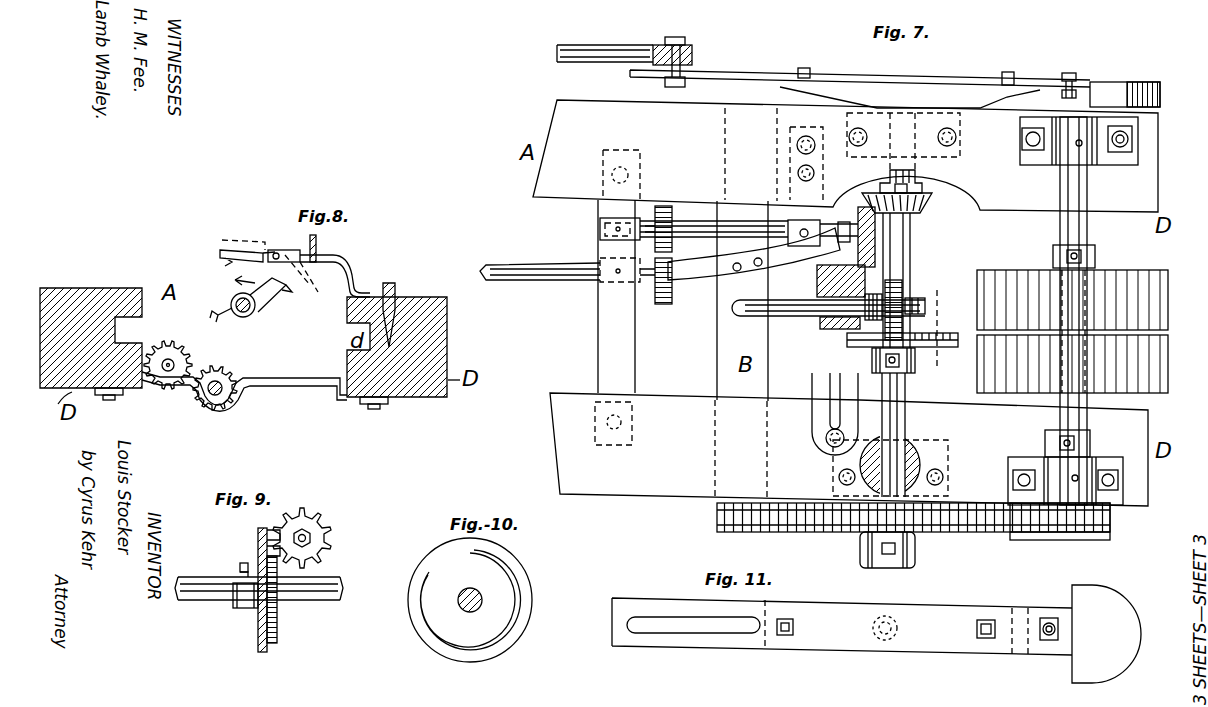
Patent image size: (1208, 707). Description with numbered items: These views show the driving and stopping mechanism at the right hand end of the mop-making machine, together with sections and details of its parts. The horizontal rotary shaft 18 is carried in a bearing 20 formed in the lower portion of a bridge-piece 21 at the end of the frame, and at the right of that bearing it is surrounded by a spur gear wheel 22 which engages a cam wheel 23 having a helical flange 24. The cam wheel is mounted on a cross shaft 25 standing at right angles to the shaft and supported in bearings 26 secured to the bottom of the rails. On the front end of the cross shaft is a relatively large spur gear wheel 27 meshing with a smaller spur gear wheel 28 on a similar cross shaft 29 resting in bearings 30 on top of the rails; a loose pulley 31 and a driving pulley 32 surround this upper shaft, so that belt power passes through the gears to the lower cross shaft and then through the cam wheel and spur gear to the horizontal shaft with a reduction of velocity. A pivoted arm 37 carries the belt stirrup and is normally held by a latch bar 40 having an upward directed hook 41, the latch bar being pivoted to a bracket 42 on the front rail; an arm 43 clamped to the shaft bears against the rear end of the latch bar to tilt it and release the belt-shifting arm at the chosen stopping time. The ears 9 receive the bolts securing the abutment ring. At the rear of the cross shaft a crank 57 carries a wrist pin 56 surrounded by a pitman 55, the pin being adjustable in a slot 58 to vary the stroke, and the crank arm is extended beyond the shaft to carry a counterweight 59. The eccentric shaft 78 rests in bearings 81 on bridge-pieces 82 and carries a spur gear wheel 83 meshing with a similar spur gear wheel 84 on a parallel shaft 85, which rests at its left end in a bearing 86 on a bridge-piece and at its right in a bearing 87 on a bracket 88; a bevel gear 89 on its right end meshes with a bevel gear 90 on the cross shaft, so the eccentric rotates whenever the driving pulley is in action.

In FIG. 7, the ears 9 is at (935, 332).
In FIG. 7, the horizontal rotary shaft 18 is at (812, 312).
In FIG. 8, the horizontal rotary shaft 18 is at (250, 310).
In FIG. 9, the horizontal rotary shaft 18 is at (308, 540).
In FIG. 7, the bearing 20 is at (822, 330).
In FIG. 7, the bridge-piece 21 is at (800, 391).
In FIG. 7, the spur gear wheel 22 is at (913, 276).
In FIG. 9, the spur gear wheel 22 is at (332, 534).
In FIG. 7, the cam wheel 23 is at (940, 346).
In FIG. 9, the cam wheel 23 is at (258, 540).
In FIG. 10, the cam wheel 23 is at (523, 556).
In FIG. 7, the helical flange 24 is at (931, 339).
In FIG. 9, the helical flange 24 is at (277, 612).
In FIG. 10, the helical flange 24 is at (525, 586).
In FIG. 7, the cross shaft 25 is at (906, 396).
In FIG. 9, the cross shaft 25 is at (324, 604).
In FIG. 10, the cross shaft 25 is at (478, 608).
In FIG. 7, the bearings 26 is at (941, 160).
In FIG. 7, the spur gear wheel 27 is at (917, 525).
In FIG. 7, the spur gear wheel 28 is at (1098, 540).
In FIG. 7, the cross shaft 29 is at (1088, 420).
In FIG. 7, the bearings 30 is at (1126, 152).
In FIG. 7, the loose pulley 31 is at (1168, 318).
In FIG. 7, the driving pulley 32 is at (1168, 362).
In FIG. 8, the arm 37 is at (316, 244).
In FIG. 8, the latch bar 40 is at (242, 250).
In FIG. 8, the hook 41 is at (300, 262).
In FIG. 8, the bracket 42 is at (355, 285).
In FIG. 8, the arm 43 is at (270, 300).
In FIG. 7, the pitman 55 is at (590, 50).
In FIG. 7, the wrist pin 56 is at (694, 50).
In FIG. 7, the crank 57 is at (750, 74).
In FIG. 11, the crank 57 is at (776, 643).
In FIG. 11, the slot 58 is at (700, 645).
In FIG. 7, the counterweight 59 is at (1102, 86).
In FIG. 11, the counterweight 59 is at (1107, 672).
In FIG. 7, the shaft 78 is at (538, 283).
In FIG. 8, the shaft 78 is at (224, 392).
In FIG. 7, the bearings 81 is at (601, 266).
In FIG. 8, the bearings 81 is at (208, 400).
In FIG. 7, the bridge-pieces 82 is at (598, 361).
In FIG. 8, the bridge-pieces 82 is at (268, 379).
In FIG. 7, the spur gear wheel 83 is at (665, 304).
In FIG. 8, the spur gear wheel 83 is at (222, 410).
In FIG. 7, the spur gear wheel 84 is at (672, 214).
In FIG. 8, the spur gear wheel 84 is at (176, 350).
In FIG. 7, the shaft 85 is at (723, 222).
In FIG. 7, the bearing 86 is at (600, 227).
In FIG. 8, the bearing 86 is at (175, 362).
In FIG. 7, the bearing 87 is at (802, 222).
In FIG. 7, the bracket 88 is at (773, 261).
In FIG. 7, the bevel gear 89 is at (858, 260).
In FIG. 7, the bevel gear 90 is at (930, 211).